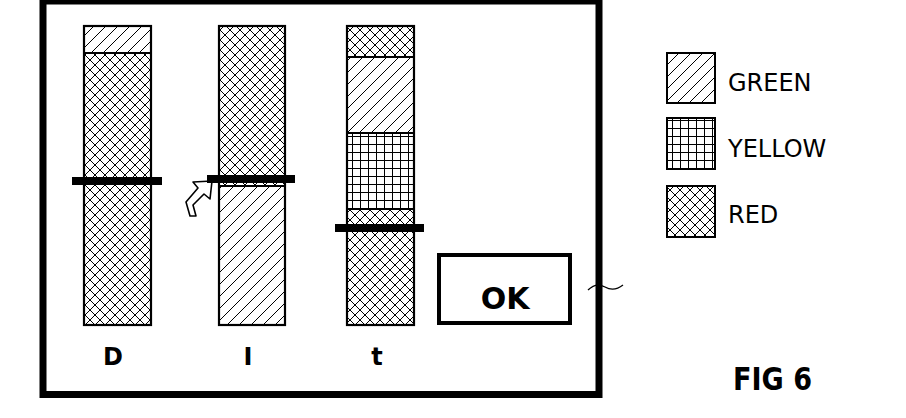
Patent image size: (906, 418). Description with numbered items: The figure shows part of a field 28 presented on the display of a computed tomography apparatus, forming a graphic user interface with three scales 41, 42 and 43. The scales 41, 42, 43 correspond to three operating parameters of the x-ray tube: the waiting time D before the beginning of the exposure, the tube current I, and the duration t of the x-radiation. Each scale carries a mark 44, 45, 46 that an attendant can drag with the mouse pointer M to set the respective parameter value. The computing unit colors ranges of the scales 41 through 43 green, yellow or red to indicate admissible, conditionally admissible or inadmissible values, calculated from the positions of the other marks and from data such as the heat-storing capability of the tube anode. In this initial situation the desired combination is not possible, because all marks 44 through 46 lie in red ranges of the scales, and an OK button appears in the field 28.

The field 28 is at (600, 378).
The scale 41 is at (151, 80).
The scale 42 is at (285, 80).
The scale 43 is at (414, 80).
The mark 44 is at (157, 178).
The mark 45 is at (285, 175).
The mark 46 is at (422, 221).
The mouse pointer M is at (191, 210).